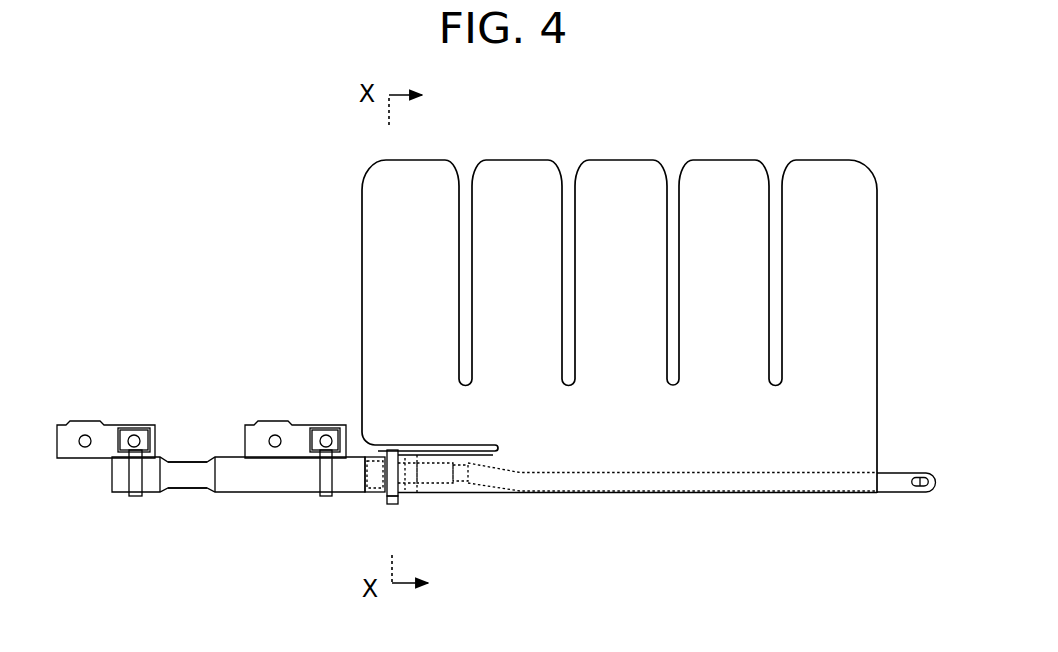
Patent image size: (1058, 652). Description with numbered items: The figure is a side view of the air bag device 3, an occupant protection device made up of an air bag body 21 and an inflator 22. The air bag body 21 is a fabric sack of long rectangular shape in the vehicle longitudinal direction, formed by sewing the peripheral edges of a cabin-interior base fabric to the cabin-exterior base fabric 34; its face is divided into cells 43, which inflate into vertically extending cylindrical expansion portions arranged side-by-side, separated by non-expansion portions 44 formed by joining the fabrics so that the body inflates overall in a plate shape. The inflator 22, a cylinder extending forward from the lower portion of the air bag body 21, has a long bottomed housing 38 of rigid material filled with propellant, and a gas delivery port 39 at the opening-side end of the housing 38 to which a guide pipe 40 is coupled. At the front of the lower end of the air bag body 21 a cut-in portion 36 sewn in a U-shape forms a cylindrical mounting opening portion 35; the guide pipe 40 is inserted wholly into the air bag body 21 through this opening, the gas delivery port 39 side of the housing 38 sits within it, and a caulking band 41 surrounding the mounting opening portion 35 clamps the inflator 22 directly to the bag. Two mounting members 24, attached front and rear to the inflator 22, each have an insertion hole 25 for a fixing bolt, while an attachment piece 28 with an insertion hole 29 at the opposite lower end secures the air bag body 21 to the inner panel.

The air bag device 3 is at (874, 137).
The air bag body 21 is at (883, 193).
The inflator 22 is at (273, 492).
The mounting member 24 is at (122, 424).
The insertion hole 25 is at (85, 436).
The attachment piece 28 is at (893, 493).
The insertion hole 29 is at (917, 478).
The base fabric 34 is at (383, 259).
The mounting opening portion 35 is at (367, 495).
The cut-in portion 36 is at (487, 451).
The housing 38 is at (228, 492).
The gas delivery port 39 is at (417, 467).
The guide pipe 40 is at (674, 493).
The caulking band 41 is at (391, 504).
The cell 43 is at (418, 176).
The non-expansion portion 44 is at (459, 216).